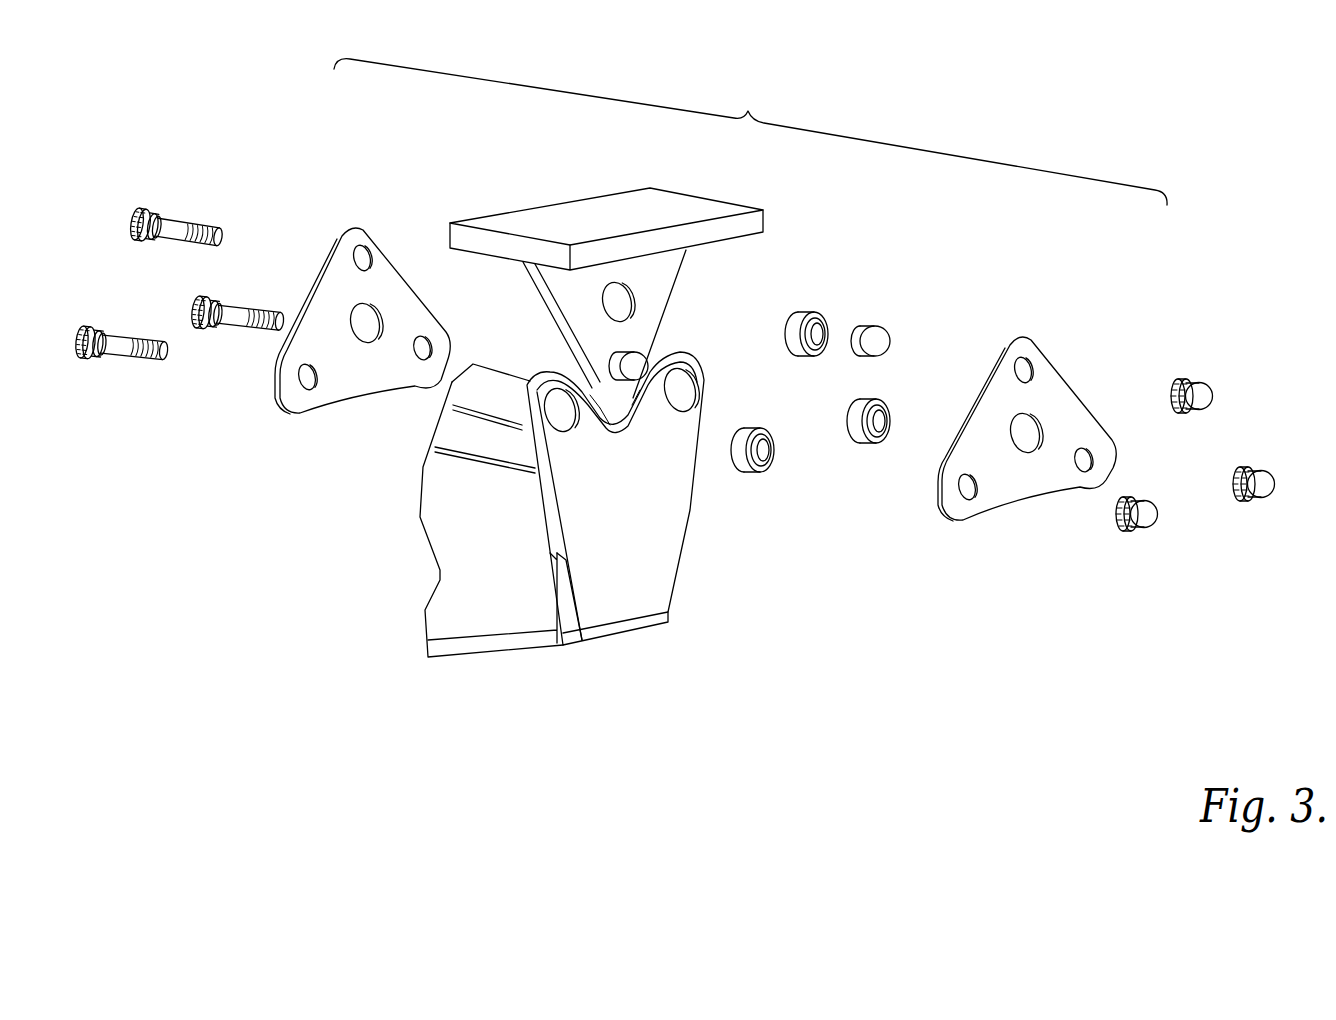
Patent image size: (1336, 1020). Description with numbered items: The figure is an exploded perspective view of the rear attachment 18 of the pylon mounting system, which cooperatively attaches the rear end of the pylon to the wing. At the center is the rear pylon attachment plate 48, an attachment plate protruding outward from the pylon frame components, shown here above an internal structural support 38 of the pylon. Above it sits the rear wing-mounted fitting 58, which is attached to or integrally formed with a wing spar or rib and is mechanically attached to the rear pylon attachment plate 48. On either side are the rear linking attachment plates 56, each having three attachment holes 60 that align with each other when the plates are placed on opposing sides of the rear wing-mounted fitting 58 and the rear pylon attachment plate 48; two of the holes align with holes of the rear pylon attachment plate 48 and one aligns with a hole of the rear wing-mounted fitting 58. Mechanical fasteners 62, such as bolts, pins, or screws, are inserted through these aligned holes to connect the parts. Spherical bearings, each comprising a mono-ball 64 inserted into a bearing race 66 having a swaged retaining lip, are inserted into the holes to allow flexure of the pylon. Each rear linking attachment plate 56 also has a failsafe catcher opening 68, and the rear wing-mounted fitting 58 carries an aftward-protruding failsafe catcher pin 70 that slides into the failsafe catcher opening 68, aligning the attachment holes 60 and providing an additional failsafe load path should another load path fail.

The rear attachment 18 is at (750, 132).
The internal structural support 38 is at (486, 650).
The rear pylon attachment plate 48 is at (668, 520).
The rear linking attachment plates 56 is at (338, 258).
The rear wing-mounted fitting 58 is at (665, 270).
The attachment holes 60 is at (375, 248).
The mechanical fasteners 62 is at (176, 222).
The mono-ball 64 is at (866, 333).
The bearing race 66 is at (810, 318).
The failsafe catcher opening 68 is at (370, 335).
The failsafe catcher pin 70 is at (637, 360).